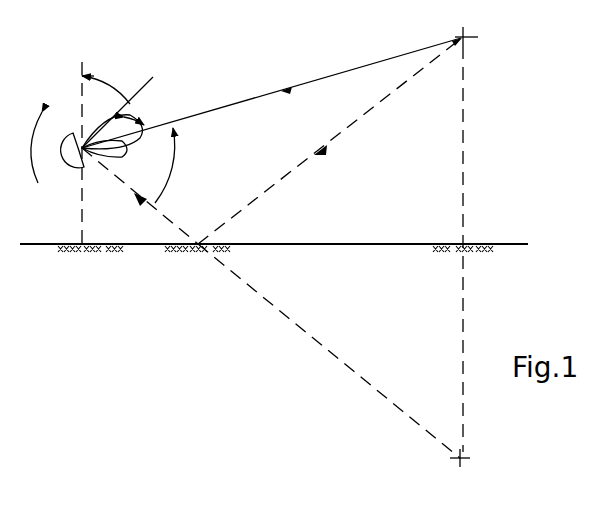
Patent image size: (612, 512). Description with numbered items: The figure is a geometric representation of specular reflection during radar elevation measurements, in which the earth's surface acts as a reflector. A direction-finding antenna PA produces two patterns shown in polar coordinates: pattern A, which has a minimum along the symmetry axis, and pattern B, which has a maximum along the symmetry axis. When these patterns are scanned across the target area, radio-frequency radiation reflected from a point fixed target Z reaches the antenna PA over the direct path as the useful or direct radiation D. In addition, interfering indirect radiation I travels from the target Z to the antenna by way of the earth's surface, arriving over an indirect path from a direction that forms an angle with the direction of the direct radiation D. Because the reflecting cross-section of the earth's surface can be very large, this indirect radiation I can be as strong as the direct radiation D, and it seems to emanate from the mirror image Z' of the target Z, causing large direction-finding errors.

The direction-finding antenna PA is at (87, 147).
The pattern A is at (123, 107).
The pattern B is at (146, 123).
The direct radiation D is at (272, 93).
The indirect radiation I is at (272, 247).
The target Z is at (473, 37).
The mirror image of the target Z' is at (468, 458).